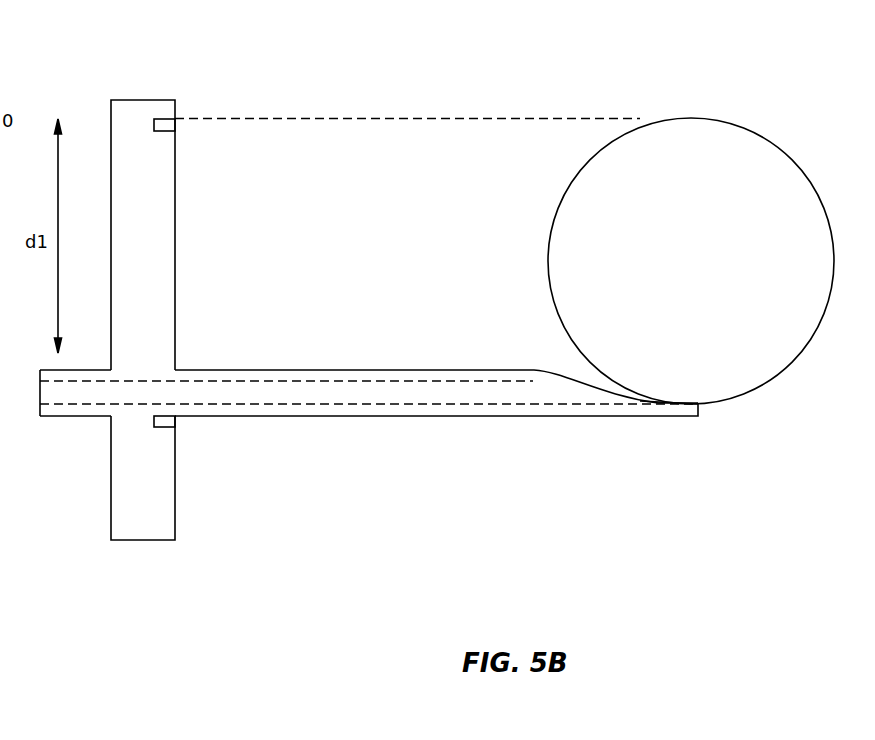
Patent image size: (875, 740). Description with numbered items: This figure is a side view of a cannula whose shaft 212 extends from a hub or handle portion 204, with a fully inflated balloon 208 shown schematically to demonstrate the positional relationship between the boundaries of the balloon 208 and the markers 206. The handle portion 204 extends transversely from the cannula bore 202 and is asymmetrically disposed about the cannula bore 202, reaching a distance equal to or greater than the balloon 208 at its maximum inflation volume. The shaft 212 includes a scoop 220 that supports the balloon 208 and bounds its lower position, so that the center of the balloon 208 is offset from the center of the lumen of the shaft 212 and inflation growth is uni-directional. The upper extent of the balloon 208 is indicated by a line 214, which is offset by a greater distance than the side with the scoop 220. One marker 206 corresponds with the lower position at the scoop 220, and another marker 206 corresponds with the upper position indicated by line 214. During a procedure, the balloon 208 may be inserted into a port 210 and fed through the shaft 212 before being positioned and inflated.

The cannula bore 202 is at (392, 404).
The handle portion 204 is at (139, 515).
The markers 206 is at (163, 122).
The balloon 208 is at (771, 352).
The port 210 is at (67, 417).
The shaft 212 is at (390, 370).
The line 214 is at (417, 118).
The scoop 220 is at (653, 408).